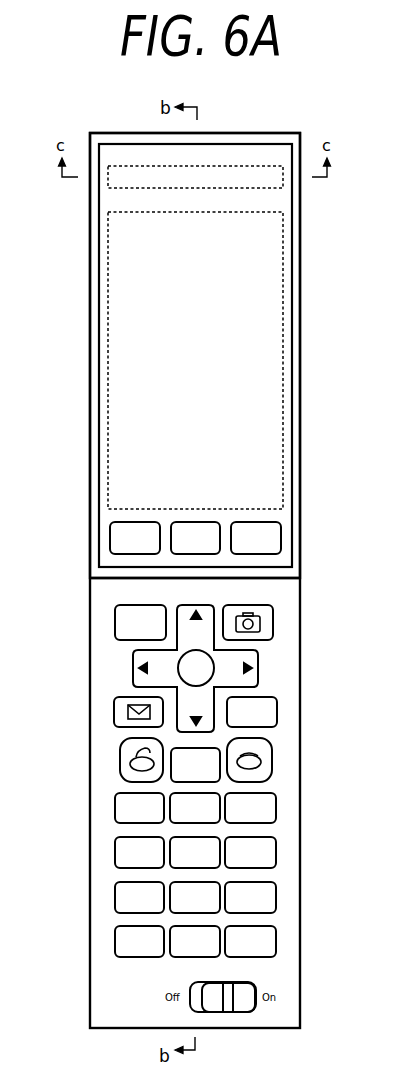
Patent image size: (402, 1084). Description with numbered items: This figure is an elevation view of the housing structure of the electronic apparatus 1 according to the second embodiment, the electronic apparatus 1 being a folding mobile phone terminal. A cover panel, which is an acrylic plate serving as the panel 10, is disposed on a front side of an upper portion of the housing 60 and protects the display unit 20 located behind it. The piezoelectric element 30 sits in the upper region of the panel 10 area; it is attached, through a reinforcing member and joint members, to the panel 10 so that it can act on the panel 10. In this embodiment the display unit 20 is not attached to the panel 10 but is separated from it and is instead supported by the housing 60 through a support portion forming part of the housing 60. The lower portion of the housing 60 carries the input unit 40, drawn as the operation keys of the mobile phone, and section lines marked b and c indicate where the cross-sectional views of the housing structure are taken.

The electronic apparatus 1 is at (154, 125).
The panel 10 is at (215, 147).
The display unit 20 is at (283, 300).
The piezoelectric element 30 is at (283, 188).
The input unit 40 is at (262, 537).
The housing 60 is at (90, 270).